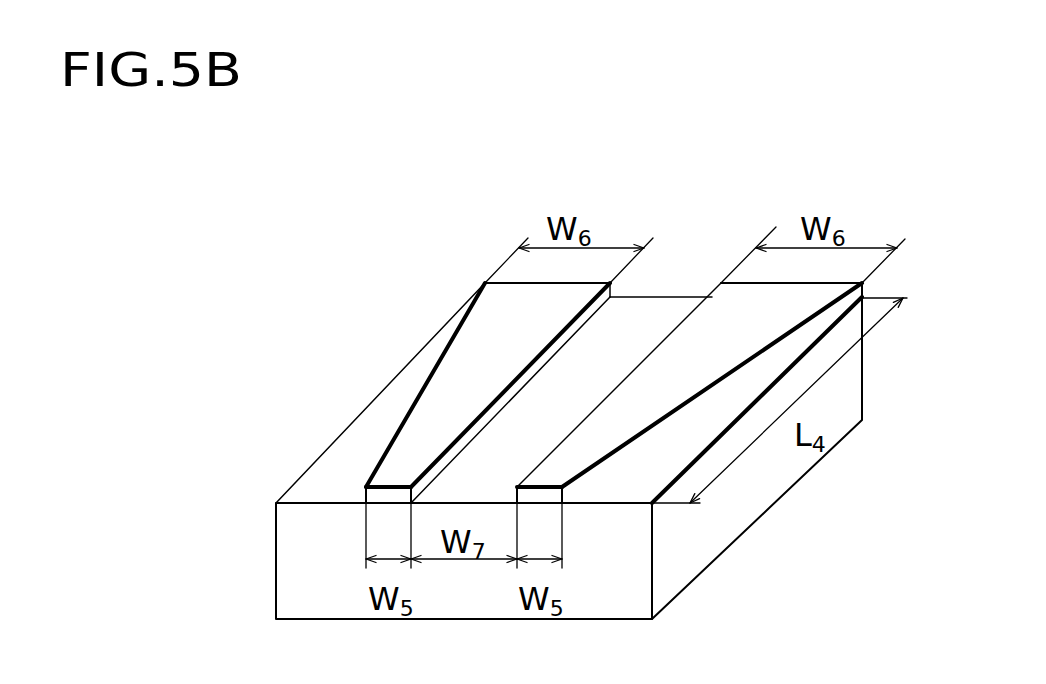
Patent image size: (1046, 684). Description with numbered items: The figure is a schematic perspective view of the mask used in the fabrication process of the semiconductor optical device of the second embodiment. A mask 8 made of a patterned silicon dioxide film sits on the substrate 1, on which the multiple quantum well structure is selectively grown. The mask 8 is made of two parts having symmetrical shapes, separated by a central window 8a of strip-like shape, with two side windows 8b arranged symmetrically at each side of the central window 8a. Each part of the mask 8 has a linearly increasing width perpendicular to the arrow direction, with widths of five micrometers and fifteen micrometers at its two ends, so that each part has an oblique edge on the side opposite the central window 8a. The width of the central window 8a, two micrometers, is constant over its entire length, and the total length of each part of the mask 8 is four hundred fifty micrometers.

The substrate 1 is at (293, 580).
The mask 8 is at (497, 307).
The central window 8a is at (657, 320).
The side windows 8b is at (348, 463).